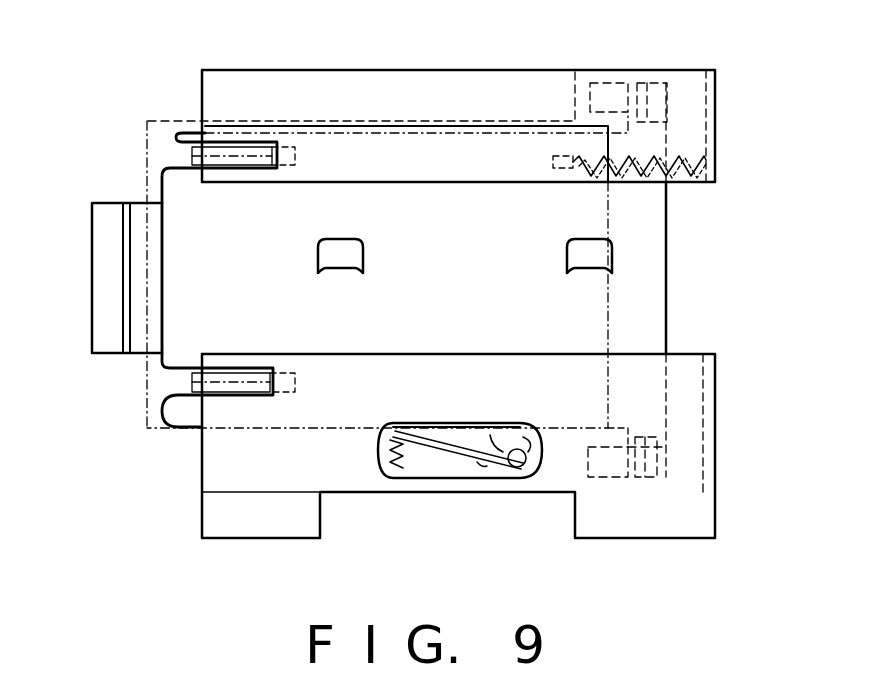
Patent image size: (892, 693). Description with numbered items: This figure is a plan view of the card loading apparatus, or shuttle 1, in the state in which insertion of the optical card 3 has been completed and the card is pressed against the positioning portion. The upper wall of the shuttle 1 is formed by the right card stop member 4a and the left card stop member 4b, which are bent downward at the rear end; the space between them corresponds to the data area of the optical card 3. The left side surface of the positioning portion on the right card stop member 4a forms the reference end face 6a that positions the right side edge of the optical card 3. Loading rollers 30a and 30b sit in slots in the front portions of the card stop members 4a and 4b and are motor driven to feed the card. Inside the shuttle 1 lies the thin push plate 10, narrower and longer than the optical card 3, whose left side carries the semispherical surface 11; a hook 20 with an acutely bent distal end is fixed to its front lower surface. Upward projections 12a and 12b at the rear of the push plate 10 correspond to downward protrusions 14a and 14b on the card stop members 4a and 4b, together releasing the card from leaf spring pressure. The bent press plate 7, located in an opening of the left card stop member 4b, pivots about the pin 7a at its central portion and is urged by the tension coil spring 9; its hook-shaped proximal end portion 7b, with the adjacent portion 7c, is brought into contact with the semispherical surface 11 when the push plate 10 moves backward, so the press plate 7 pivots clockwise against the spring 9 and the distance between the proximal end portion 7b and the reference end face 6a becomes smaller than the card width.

The shuttle 1 is at (78, 382).
The optical card 3 is at (610, 317).
The right card stop member 4a is at (307, 90).
The left card stop member 4b is at (337, 482).
The reference end face 6a is at (440, 124).
The press plate 7 is at (460, 474).
The pin 7a is at (478, 460).
The proximal end portion 7b is at (487, 423).
The latch spring portion 7c is at (388, 433).
The tension coil spring 9 is at (400, 484).
The push plate 10 is at (660, 260).
The semispherical surface 11 is at (547, 457).
The upward projection 12a is at (660, 112).
The upward projection 12b is at (667, 450).
The downward protrusion 14a is at (596, 96).
The downward protrusion 14b is at (588, 463).
The hook 20 is at (100, 203).
The loading roller 30a is at (192, 155).
The loading roller 30b is at (192, 381).